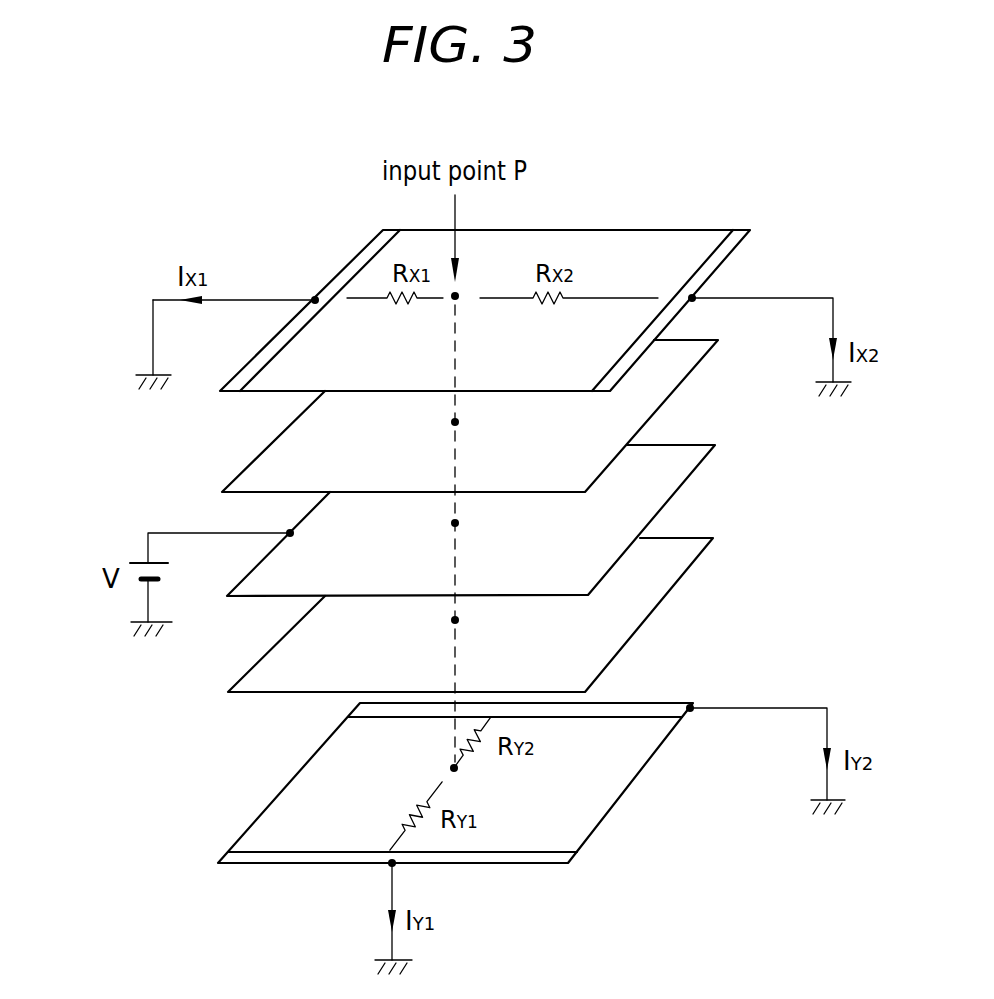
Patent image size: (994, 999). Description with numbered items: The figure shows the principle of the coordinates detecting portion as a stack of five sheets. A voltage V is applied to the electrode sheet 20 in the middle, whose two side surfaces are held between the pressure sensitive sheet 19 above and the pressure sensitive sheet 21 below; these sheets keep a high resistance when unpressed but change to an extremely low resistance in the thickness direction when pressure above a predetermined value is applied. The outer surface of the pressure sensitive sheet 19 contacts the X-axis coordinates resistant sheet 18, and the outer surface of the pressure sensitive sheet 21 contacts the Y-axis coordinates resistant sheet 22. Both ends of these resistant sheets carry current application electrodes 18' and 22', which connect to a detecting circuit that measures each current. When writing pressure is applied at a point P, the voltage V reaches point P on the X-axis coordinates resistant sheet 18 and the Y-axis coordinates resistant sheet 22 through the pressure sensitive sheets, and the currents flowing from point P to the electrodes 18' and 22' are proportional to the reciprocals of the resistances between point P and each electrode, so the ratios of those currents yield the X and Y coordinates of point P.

The X-axis coordinates resistant sheet 18 is at (523, 310).
The current application electrodes 18' is at (493, 253).
The pressure sensitive sheet 19 is at (655, 393).
The electrode sheet 20 is at (657, 490).
The pressure sensitive sheet 21 is at (643, 593).
The Y-axis coordinates resistant sheet 22 is at (462, 783).
The current application electrodes 22' is at (356, 780).